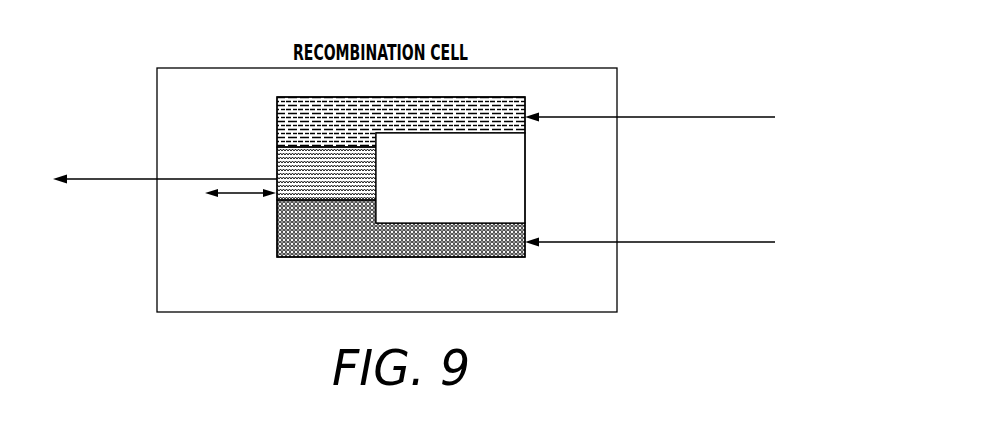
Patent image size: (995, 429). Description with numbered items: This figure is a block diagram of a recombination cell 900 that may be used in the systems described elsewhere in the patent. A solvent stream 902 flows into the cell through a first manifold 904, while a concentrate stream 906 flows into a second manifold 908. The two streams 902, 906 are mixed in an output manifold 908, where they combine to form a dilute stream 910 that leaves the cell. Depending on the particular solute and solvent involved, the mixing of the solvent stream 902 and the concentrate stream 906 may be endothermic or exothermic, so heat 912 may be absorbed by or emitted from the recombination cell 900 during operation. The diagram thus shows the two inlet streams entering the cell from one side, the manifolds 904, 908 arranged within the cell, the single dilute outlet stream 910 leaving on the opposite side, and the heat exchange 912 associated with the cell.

The recombination cell 900 is at (583, 68).
The solvent stream 902 is at (660, 120).
The first manifold 904 is at (513, 97).
The concentrate stream 906 is at (674, 245).
The second manifold 908 is at (288, 162).
The dilute stream 910 is at (117, 181).
The heat 912 is at (257, 196).